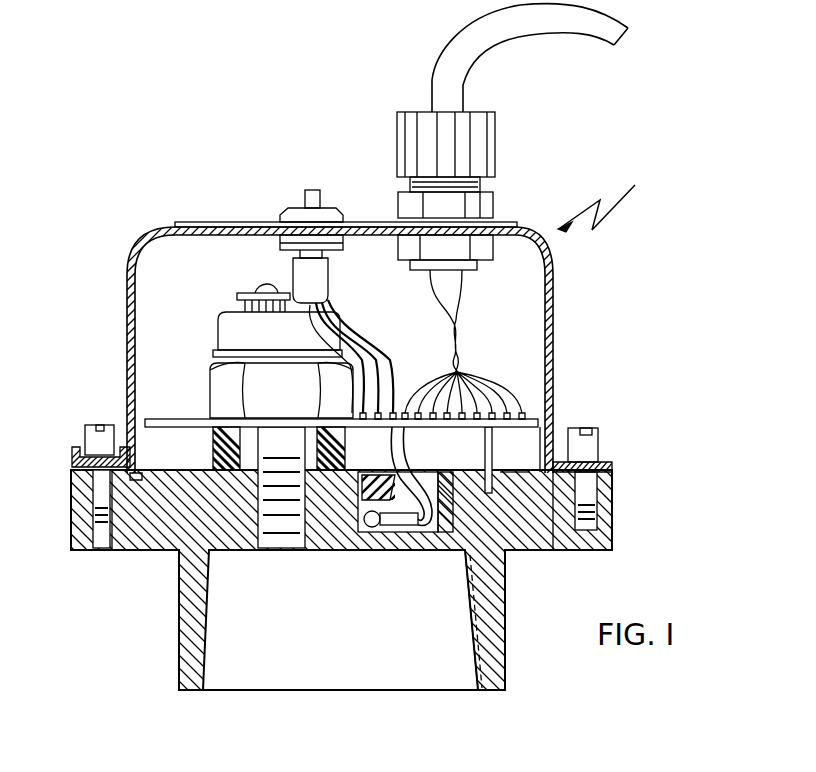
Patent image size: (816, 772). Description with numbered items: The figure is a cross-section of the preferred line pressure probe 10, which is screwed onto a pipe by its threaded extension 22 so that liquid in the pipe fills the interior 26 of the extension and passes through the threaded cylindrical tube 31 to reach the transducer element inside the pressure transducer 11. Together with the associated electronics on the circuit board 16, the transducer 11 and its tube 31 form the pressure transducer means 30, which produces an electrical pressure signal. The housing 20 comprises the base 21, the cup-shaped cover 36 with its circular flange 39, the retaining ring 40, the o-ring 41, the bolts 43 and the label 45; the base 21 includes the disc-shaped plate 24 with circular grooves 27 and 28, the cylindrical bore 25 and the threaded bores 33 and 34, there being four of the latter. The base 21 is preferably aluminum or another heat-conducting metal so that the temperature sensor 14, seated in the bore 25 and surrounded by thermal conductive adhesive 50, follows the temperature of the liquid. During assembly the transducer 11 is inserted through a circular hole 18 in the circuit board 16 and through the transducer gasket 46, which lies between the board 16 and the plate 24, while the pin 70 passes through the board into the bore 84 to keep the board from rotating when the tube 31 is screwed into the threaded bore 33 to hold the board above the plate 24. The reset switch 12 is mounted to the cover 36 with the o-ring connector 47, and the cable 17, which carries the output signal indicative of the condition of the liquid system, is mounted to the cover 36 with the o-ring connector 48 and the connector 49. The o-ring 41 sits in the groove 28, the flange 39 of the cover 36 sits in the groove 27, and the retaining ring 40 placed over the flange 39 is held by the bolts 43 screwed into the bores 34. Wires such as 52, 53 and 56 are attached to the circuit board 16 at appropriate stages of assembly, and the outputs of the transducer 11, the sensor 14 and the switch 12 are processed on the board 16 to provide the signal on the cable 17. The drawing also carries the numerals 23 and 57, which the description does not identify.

The line pressure probe 10 is at (610, 195).
The pressure transducer 11 is at (225, 333).
The reset switch 12 is at (328, 272).
The temperature sensor 14 is at (400, 540).
The circuit board 16 is at (160, 419).
The cable 17 is at (450, 55).
The circular hole 18 is at (238, 405).
The housing 20 is at (612, 510).
The base 21 is at (515, 560).
The threaded extension 22 is at (505, 665).
The inner surface 23 is at (478, 640).
The disc-shaped plate 24 is at (560, 540).
The cylindrical bore 25 is at (432, 473).
The interior 26 is at (398, 675).
The circular groove 27 is at (140, 474).
The circular groove 28 is at (148, 488).
The pressure transducer means 30 is at (203, 309).
The threaded cylindrical tube 31 is at (293, 550).
The threaded bore 33 is at (262, 550).
The threaded bores 34 is at (100, 552).
The cup-shaped cover 36 is at (555, 328).
The circular flange 39 is at (612, 470).
The retaining ring 40 is at (605, 460).
The o-ring 41 is at (523, 464).
The bolts 43 is at (600, 430).
The label 45 is at (185, 222).
The transducer gasket 46 is at (213, 452).
The o-ring connector 47 is at (280, 222).
The o-ring connector 48 is at (493, 205).
The connector 49 is at (485, 143).
The thermal conductive adhesive 50 is at (362, 460).
The wire 52 is at (412, 468).
The wires 53 is at (388, 345).
The wires 56 is at (465, 345).
The terminal pin 57 is at (312, 190).
The pin 70 is at (486, 443).
The bore 84 is at (522, 462).